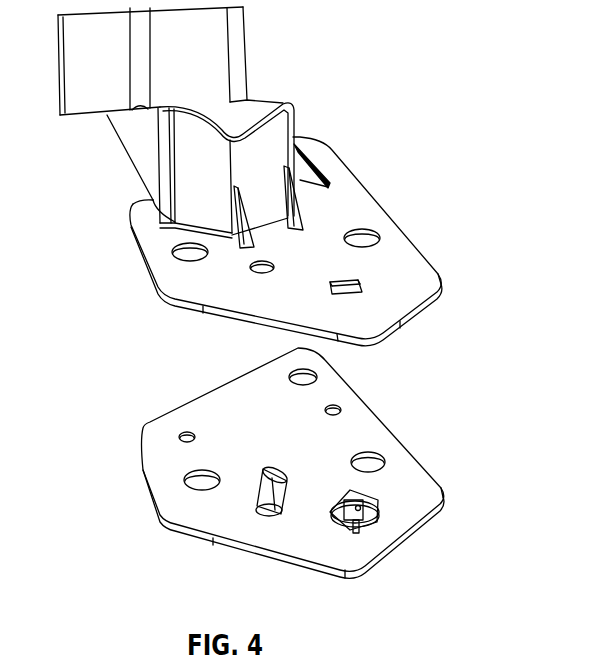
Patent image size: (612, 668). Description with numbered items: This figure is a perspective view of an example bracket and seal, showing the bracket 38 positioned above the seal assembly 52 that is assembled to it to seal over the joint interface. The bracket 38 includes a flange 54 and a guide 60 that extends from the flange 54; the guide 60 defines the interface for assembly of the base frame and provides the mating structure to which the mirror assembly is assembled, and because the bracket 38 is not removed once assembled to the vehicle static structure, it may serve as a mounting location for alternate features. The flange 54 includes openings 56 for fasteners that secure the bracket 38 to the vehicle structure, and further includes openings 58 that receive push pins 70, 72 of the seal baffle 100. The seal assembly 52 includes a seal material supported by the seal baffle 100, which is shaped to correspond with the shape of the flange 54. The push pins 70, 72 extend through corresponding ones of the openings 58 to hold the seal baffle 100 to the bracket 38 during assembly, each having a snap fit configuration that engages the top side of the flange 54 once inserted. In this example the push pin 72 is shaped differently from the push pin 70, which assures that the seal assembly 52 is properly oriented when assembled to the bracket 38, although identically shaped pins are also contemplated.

The bracket 38 is at (366, 97).
The guide 60 is at (218, 68).
The flange 54 is at (408, 275).
The openings 56 is at (183, 250).
The openings 58 is at (252, 268).
The seal assembly 52 is at (416, 394).
The seal baffle 100 is at (418, 498).
The push pin 70 is at (372, 506).
The push pin 72 is at (268, 517).